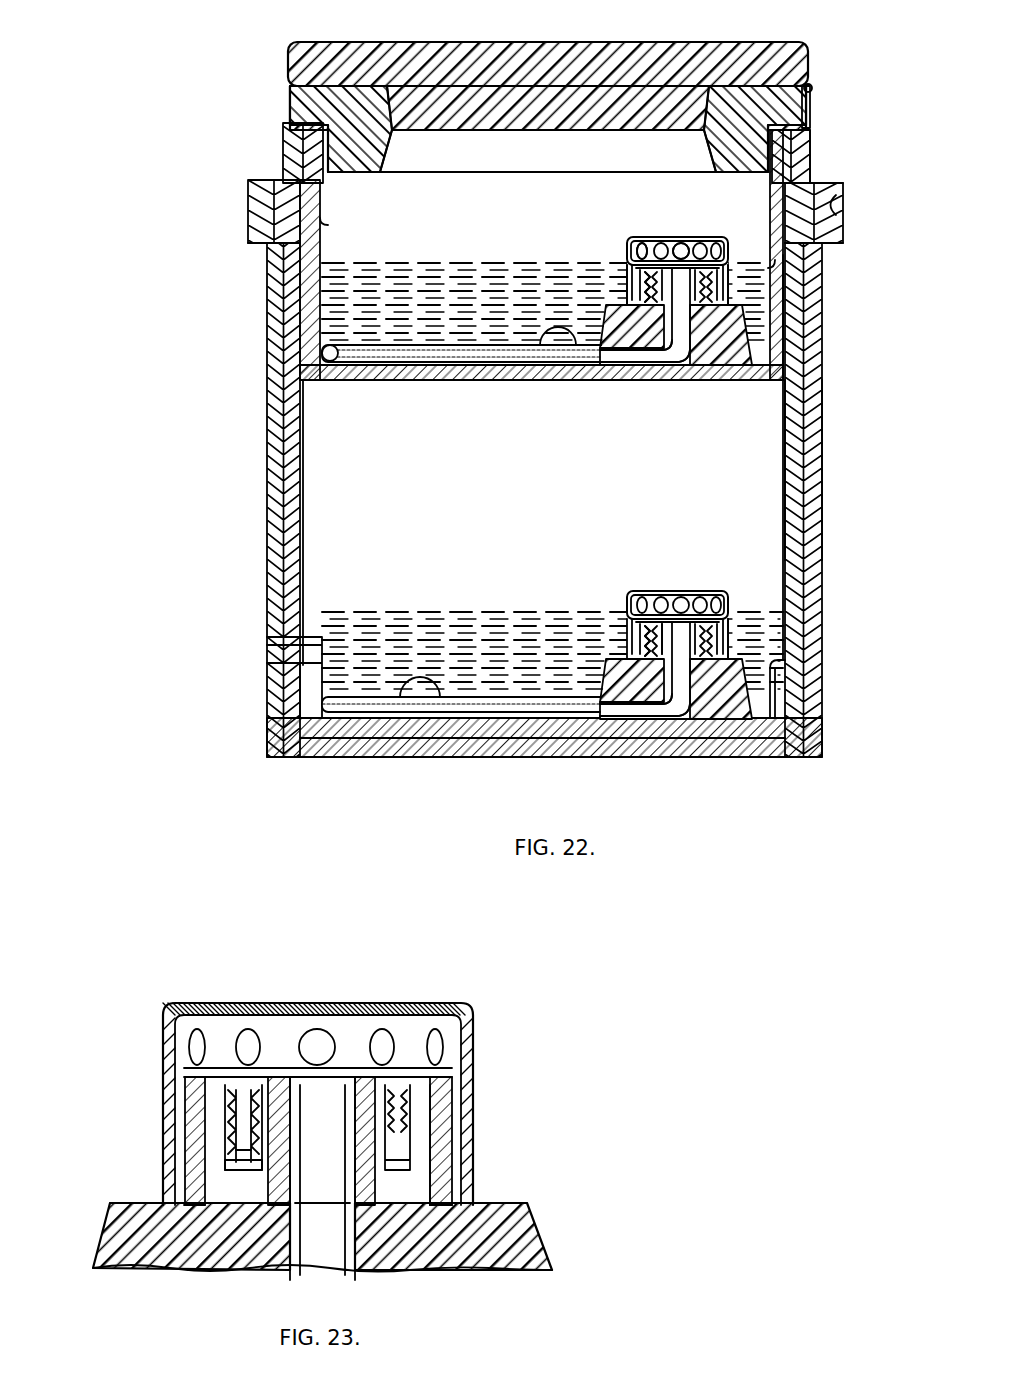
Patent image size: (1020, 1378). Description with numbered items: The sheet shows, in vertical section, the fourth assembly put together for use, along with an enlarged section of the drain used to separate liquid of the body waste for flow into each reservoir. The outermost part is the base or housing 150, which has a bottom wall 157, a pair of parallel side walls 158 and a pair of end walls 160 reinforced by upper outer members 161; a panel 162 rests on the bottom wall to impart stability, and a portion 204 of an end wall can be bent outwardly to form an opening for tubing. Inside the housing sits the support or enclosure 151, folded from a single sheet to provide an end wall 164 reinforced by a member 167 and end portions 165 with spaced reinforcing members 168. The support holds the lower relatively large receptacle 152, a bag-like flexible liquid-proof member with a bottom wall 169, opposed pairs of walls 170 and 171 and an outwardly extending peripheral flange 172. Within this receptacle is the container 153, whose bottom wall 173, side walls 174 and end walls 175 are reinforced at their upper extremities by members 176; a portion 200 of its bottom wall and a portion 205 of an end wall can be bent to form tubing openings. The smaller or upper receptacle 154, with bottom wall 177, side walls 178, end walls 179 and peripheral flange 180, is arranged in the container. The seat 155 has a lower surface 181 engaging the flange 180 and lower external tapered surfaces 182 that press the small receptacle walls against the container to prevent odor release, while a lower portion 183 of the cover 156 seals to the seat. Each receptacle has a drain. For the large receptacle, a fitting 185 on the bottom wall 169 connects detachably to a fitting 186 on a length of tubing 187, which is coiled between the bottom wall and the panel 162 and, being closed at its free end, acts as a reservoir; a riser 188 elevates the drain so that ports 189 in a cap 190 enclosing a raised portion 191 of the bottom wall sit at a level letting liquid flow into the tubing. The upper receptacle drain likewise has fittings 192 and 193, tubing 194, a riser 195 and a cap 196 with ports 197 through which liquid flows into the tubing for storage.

In FIG. 22, the base or housing 150 is at (822, 508).
In FIG. 22, the support or enclosure 151 is at (806, 468).
In FIG. 22, the lower relatively large receptacle 152 is at (789, 482).
In FIG. 22, the container 153 is at (810, 190).
In FIG. 22, the smaller or upper receptacle 154 is at (765, 312).
In FIG. 23, the smaller or upper receptacle 154 is at (505, 1200).
In FIG. 22, the seat 155 is at (285, 105).
In FIG. 22, the cover 156 is at (283, 57).
In FIG. 22, the bottom wall 157 is at (515, 748).
In FIG. 22, the side walls 158 is at (323, 462).
In FIG. 22, the end walls 160 is at (276, 544).
In FIG. 22, the upper outer members 161 is at (262, 236).
In FIG. 22, the panel 162 is at (762, 735).
In FIG. 22, the end wall 164 is at (800, 405).
In FIG. 22, the end portions 165 is at (291, 496).
In FIG. 22, the reinforcing member 167 is at (783, 710).
In FIG. 22, the spaced reinforcing members 168 is at (306, 708).
In FIG. 22, the bottom wall 169 is at (432, 704).
In FIG. 23, the bottom wall 169 is at (105, 1216).
In FIG. 22, the walls 170 is at (304, 572).
In FIG. 22, the walls 171 is at (783, 445).
In FIG. 22, the peripheral flange 172 is at (836, 200).
In FIG. 22, the bottom wall 173 is at (612, 375).
In FIG. 22, the side walls 174 is at (514, 200).
In FIG. 22, the end walls 175 is at (278, 310).
In FIG. 22, the reinforcing members 176 is at (300, 160).
In FIG. 22, the bottom wall 177 is at (530, 360).
In FIG. 22, the side walls 178 is at (418, 228).
In FIG. 22, the end walls 179 is at (320, 221).
In FIG. 22, the peripheral flange 180 is at (268, 185).
In FIG. 22, the lower surface 181 is at (812, 100).
In FIG. 22, the lower external tapered surfaces 182 is at (548, 188).
In FIG. 22, the lower portion of the cover 183 is at (470, 126).
In FIG. 22, the fitting 185 is at (650, 620).
In FIG. 23, the fitting 185 is at (240, 1127).
In FIG. 22, the fitting 186 is at (673, 630).
In FIG. 23, the fitting 186 is at (262, 1158).
In FIG. 22, the tubing 187 is at (450, 705).
In FIG. 23, the tubing 187 is at (325, 1262).
In FIG. 22, the riser 188 is at (708, 712).
In FIG. 23, the riser 188 is at (530, 1225).
In FIG. 22, the ports 189 is at (632, 126).
In FIG. 23, the ports 189 is at (320, 1010).
In FIG. 22, the cap 190 is at (720, 596).
In FIG. 23, the cap 190 is at (460, 1010).
In FIG. 22, the raised portion 191 is at (660, 690).
In FIG. 23, the raised portion 191 is at (470, 1125).
In FIG. 22, the fitting 192 is at (627, 270).
In FIG. 22, the fitting 193 is at (662, 262).
In FIG. 22, the tubing 194 is at (497, 357).
In FIG. 22, the riser 195 is at (730, 360).
In FIG. 22, the cap 196 is at (713, 240).
In FIG. 22, the ports 197 is at (642, 272).
In FIG. 22, the portion of the bottom wall of the container 200 is at (355, 374).
In FIG. 22, the portion of an end wall of the housing 204 is at (278, 722).
In FIG. 22, the portion of an end wall of the container 205 is at (312, 354).